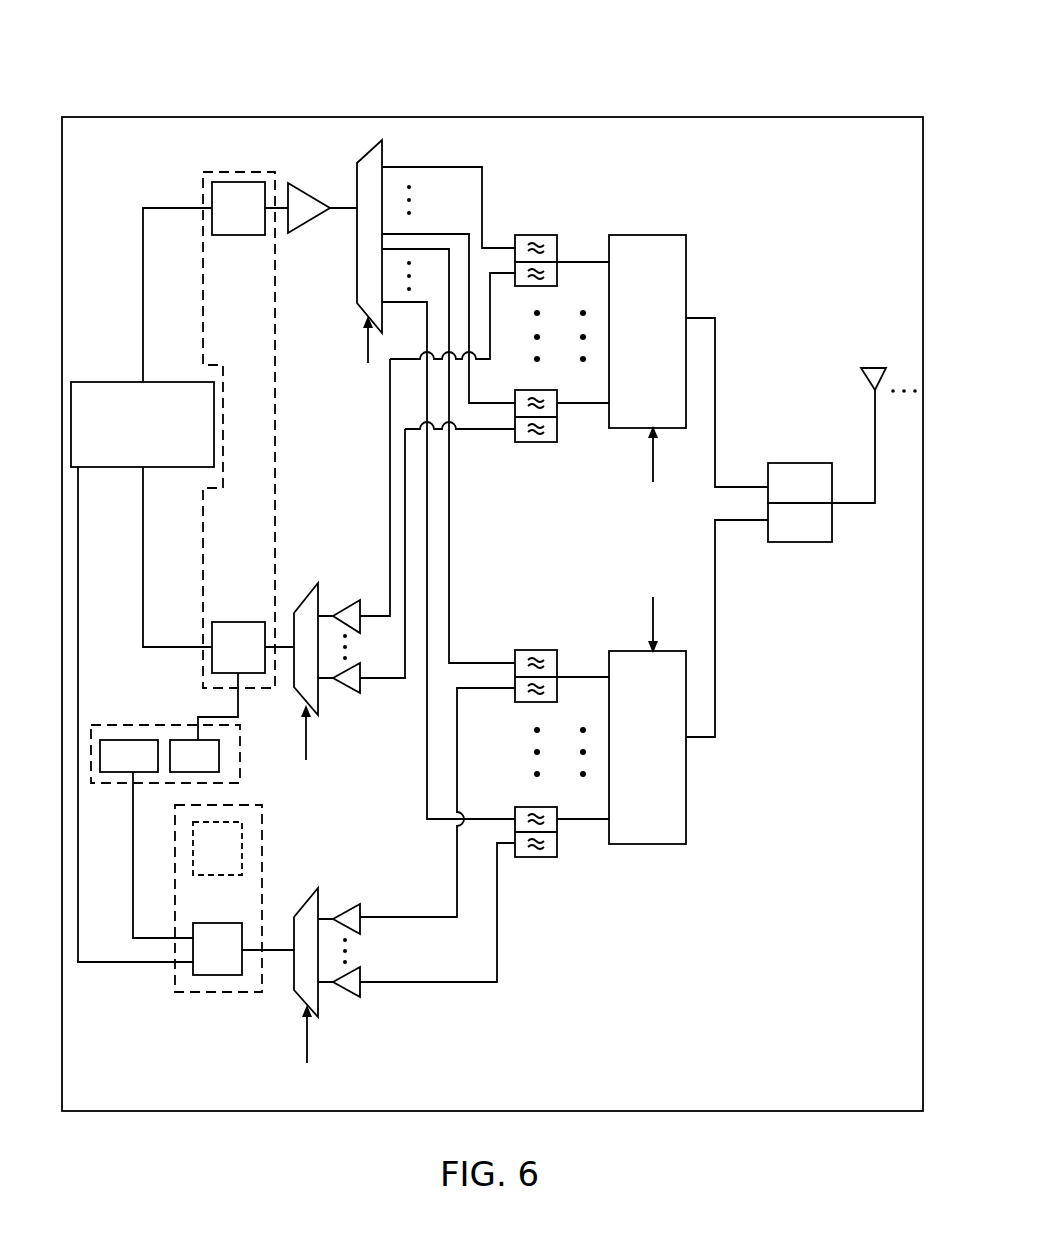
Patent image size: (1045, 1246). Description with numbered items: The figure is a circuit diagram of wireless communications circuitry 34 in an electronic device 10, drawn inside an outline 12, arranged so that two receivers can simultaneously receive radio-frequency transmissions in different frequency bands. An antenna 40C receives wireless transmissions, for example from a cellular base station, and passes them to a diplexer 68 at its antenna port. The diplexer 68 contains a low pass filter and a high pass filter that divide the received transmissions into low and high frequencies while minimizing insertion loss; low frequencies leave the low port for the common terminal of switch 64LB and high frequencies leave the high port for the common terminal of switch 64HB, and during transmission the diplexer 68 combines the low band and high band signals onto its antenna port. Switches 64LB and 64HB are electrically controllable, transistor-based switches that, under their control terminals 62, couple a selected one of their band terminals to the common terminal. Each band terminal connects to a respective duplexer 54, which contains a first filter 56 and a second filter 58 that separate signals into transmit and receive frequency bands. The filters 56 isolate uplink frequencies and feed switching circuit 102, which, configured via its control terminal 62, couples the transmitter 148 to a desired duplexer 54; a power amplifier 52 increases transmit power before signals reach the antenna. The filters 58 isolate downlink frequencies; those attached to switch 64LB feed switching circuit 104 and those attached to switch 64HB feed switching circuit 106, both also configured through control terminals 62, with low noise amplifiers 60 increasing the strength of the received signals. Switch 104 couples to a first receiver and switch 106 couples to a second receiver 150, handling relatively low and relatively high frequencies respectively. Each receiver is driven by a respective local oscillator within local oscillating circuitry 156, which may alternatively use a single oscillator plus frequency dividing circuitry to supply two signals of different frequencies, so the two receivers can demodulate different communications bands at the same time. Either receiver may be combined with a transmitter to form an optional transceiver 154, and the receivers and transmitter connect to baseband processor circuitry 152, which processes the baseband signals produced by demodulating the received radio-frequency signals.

The device 10 is at (785, 35).
The wireless circuitry 12 is at (813, 117).
The wireless communications circuitry 34 is at (843, 193).
The antenna 40C is at (870, 368).
The power amplifier 52 is at (297, 185).
The duplexer 54 is at (553, 549).
The filter 56 is at (518, 236).
The filter 58 is at (557, 275).
The low noise amplifier 60 is at (352, 600).
The control terminal 62 is at (368, 340).
The switch 64LB is at (653, 235).
The switch 64HB is at (650, 845).
The diplexer 68 is at (793, 455).
The switching circuit 102 is at (382, 157).
The switching circuit 104 is at (316, 598).
The switching circuit 106 is at (307, 903).
The transmitter 148 is at (233, 236).
The receiver 150 is at (226, 622).
The baseband processor circuitry 152 is at (113, 382).
The optional transceiver 154 is at (230, 172).
The local oscillating circuitry 156 is at (113, 725).